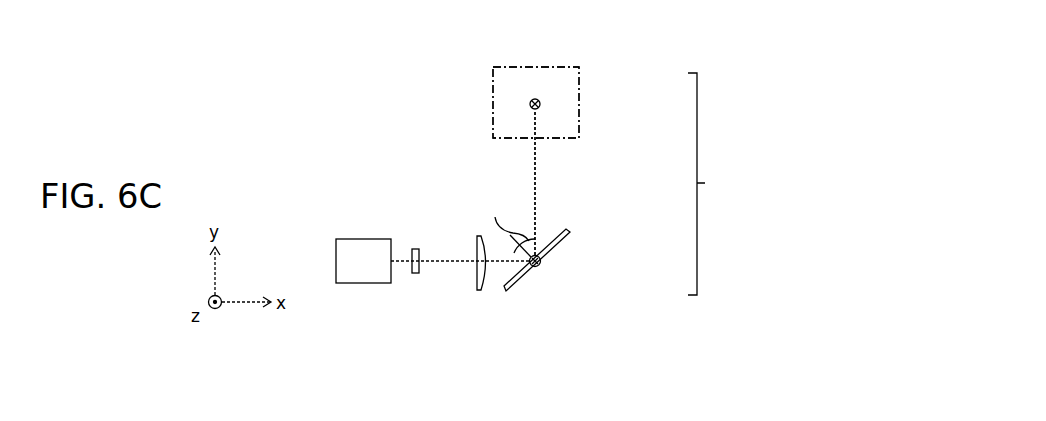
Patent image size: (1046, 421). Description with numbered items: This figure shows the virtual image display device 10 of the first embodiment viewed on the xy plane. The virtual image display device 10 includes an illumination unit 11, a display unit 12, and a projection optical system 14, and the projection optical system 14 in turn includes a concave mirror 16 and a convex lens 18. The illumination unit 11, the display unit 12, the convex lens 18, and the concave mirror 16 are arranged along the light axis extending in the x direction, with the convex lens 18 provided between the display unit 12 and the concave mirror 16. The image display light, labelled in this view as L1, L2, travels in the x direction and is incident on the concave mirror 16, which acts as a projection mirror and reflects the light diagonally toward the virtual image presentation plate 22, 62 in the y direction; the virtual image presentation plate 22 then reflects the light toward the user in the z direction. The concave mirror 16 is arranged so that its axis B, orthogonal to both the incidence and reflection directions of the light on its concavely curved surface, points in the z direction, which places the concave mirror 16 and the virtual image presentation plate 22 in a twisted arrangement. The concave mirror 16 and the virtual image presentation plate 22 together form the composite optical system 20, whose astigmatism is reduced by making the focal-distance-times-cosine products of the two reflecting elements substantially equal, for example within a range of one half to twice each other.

The virtual image display device 10 is at (392, 181).
The illumination unit 11 is at (363, 284).
The display unit 12 is at (416, 274).
The projection optical system 14 is at (573, 200).
The concave mirror 16 is at (557, 248).
The convex lens 18 is at (481, 292).
The composite optical system 20 is at (714, 184).
The virtual image presentation plate 22 is at (583, 97).
The object 62 is at (536, 102).
The axis B is at (540, 266).
The light beam L1 is at (533, 161).
The light beam L2 is at (494, 182).